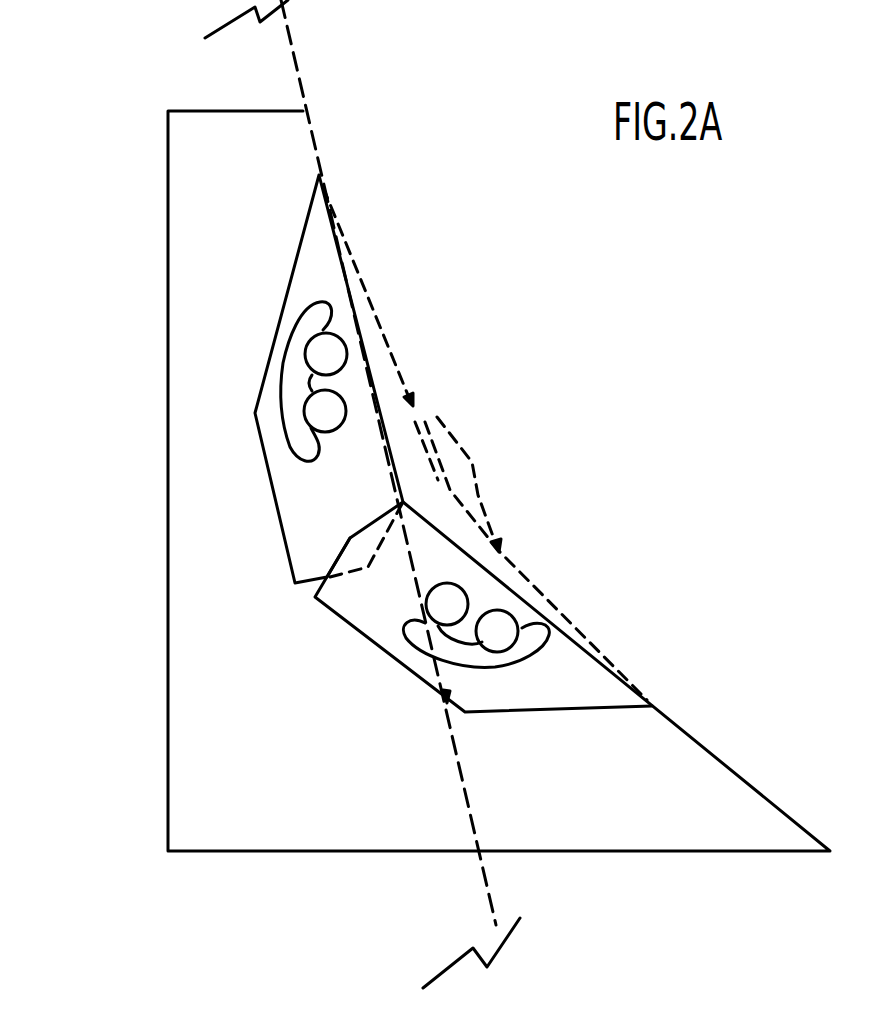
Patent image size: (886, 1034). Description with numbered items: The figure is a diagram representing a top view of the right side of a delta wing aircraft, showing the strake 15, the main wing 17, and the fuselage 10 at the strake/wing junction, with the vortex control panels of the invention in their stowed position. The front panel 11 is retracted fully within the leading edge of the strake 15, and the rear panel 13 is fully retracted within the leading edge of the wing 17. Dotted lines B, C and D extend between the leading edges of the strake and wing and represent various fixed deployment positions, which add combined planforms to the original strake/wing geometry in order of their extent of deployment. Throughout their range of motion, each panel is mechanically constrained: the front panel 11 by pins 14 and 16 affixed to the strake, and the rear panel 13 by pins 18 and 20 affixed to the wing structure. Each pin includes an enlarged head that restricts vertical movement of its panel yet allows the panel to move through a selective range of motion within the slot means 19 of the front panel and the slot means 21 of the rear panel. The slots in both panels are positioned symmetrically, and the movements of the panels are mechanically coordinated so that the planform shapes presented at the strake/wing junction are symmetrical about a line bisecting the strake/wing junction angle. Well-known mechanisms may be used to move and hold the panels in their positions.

The fuselage 10 is at (257, 72).
The front panel 11 is at (322, 265).
The rear panel 13 is at (585, 683).
The pin 14 is at (326, 354).
The strake 15 is at (265, 165).
The pin 16 is at (325, 411).
The main wing 17 is at (678, 788).
The pin 18 is at (447, 604).
The slot means 19 is at (297, 383).
The pin 20 is at (497, 631).
The slot means 21 is at (420, 635).
The dotted line B is at (478, 497).
The dotted line C is at (457, 477).
The dotted line D is at (437, 416).